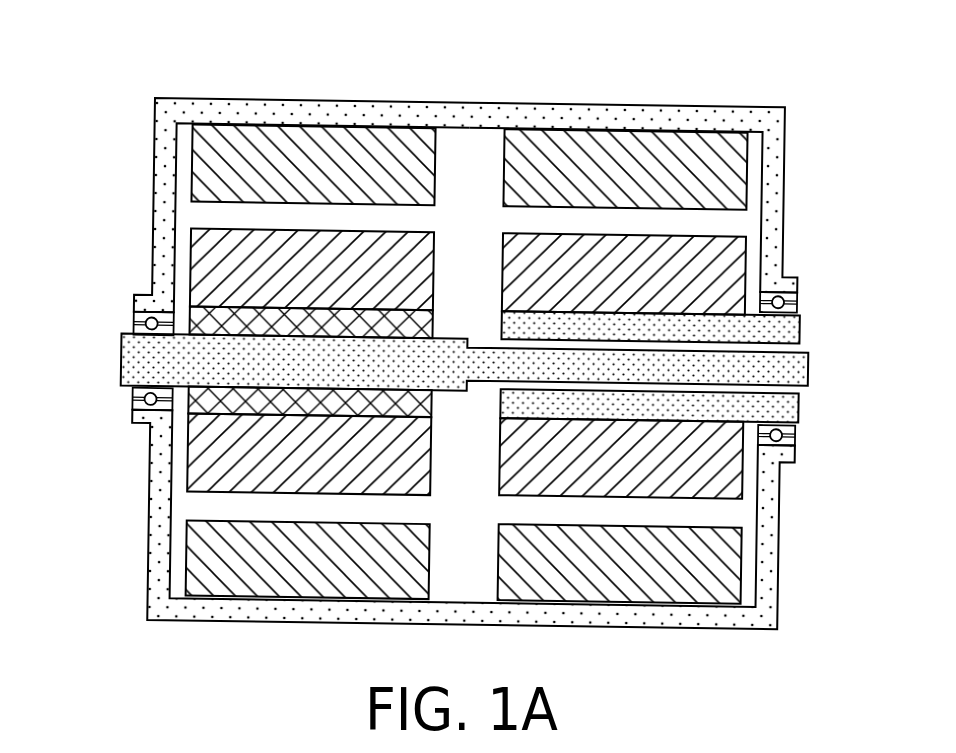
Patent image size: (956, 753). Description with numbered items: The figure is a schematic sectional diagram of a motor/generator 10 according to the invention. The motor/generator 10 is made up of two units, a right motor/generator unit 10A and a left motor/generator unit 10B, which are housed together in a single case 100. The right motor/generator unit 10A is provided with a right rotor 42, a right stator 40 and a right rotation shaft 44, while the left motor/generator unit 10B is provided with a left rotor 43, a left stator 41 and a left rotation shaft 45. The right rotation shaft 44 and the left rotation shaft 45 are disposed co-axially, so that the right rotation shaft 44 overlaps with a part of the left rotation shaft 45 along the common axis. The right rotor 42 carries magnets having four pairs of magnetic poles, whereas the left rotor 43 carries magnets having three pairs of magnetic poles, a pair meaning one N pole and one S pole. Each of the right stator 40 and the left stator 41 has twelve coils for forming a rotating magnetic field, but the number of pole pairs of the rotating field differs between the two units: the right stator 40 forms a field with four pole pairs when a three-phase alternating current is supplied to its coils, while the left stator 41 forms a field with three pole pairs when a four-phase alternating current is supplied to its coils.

The motor/generator 10 is at (472, 319).
The case 100 is at (465, 319).
The right motor/generator unit 10A is at (675, 120).
The left motor/generator unit 10B is at (295, 121).
The right stator 40 is at (746, 174).
The left stator 41 is at (194, 166).
The right rotor 42 is at (747, 248).
The left rotor 43 is at (195, 261).
The right rotation shaft 44 is at (796, 320).
The left rotation shaft 45 is at (136, 360).